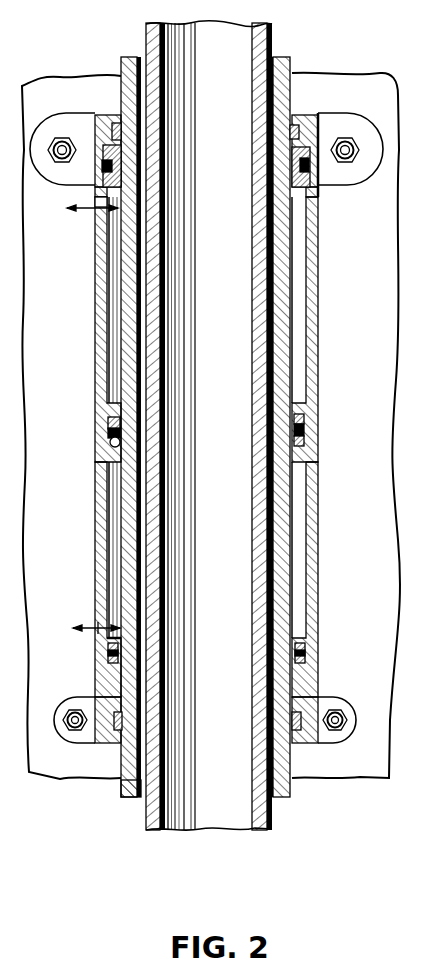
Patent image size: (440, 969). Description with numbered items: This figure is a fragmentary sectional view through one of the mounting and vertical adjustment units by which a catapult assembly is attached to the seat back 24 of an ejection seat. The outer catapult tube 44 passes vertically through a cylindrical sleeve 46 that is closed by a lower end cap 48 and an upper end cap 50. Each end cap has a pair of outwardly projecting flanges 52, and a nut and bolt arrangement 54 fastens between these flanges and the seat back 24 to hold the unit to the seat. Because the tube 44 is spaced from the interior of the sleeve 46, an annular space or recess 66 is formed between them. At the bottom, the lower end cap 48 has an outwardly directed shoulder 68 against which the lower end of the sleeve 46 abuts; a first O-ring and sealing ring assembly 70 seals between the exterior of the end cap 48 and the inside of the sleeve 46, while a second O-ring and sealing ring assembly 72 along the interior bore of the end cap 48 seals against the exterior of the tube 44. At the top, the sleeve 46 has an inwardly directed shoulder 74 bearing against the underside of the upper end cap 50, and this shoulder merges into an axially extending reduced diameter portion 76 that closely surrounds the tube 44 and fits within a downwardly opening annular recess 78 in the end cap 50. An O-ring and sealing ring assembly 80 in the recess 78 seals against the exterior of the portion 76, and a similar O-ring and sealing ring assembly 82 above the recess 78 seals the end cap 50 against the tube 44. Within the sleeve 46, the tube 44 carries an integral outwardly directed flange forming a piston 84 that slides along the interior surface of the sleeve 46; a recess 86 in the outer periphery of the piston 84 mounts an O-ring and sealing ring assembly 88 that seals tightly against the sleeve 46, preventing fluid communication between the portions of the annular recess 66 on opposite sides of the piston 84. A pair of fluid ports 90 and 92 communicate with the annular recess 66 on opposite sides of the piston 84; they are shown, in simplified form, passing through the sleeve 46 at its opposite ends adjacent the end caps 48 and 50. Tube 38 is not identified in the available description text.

The seat back 24 is at (366, 364).
The tube 38 is at (153, 818).
The outer catapult tube 44 is at (121, 787).
The cylindrical sleeve 46 is at (312, 530).
The lower end cap 48 is at (108, 740).
The upper end cap 50 is at (300, 115).
The flange 52 is at (72, 742).
The nut and bolt arrangement 54 is at (70, 716).
The annular space or recess 66 is at (298, 318).
The outwardly directed shoulder 68 is at (318, 698).
The first O-ring and sealing ring assembly 70 is at (305, 650).
The second O-ring and sealing ring assembly 72 is at (292, 718).
The inwardly directed shoulder 74 is at (297, 198).
The reduced diameter portion 76 is at (292, 170).
The downwardly opening annular recess 78 is at (300, 165).
The O-ring and sealing ring assembly 80 is at (318, 186).
The O-ring and sealing ring assembly 82 is at (290, 133).
The piston 84 is at (110, 413).
The recess 86 is at (112, 444).
The O-ring and sealing ring assembly 88 is at (110, 433).
The fluid port 90 is at (100, 212).
The fluid port 92 is at (103, 620).